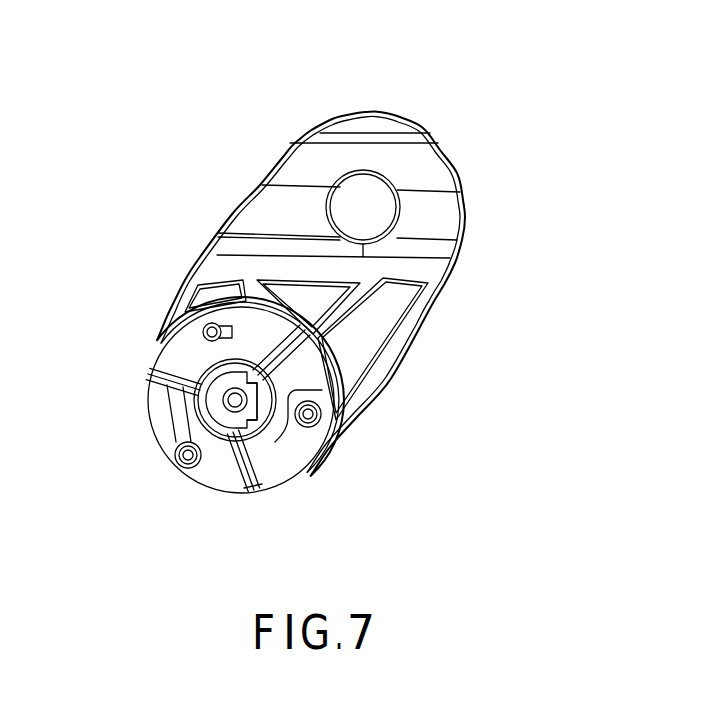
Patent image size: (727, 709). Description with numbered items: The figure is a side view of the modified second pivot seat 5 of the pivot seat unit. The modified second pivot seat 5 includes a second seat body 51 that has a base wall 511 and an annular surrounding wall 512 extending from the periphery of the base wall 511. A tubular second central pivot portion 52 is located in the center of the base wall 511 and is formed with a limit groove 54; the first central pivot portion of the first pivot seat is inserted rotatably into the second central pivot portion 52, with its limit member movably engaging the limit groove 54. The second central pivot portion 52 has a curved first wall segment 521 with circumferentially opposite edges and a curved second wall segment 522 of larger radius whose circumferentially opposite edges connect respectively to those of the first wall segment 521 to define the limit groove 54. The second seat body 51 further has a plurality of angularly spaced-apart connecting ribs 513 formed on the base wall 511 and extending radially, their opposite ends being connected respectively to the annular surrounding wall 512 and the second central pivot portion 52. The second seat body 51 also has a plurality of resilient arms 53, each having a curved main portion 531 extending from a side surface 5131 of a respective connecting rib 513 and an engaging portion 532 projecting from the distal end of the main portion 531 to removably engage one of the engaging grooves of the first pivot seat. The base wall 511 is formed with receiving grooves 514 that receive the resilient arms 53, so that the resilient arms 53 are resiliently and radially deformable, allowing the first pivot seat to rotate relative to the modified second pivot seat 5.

The modified second pivot seat 5 is at (138, 290).
The second seat body 51 is at (345, 362).
The base wall 511 is at (302, 362).
The annular surrounding wall 512 is at (317, 347).
The connecting ribs 513 is at (247, 472).
The side surface 5131 is at (278, 488).
The receiving grooves 514 is at (304, 388).
The second central pivot portion 52 is at (296, 379).
The first wall segment 521 is at (258, 379).
The second wall segment 522 is at (235, 359).
The resilient arms 53 is at (176, 366).
The main portion 531 is at (178, 453).
The engaging portion 532 is at (186, 464).
The limit groove 54 is at (222, 428).